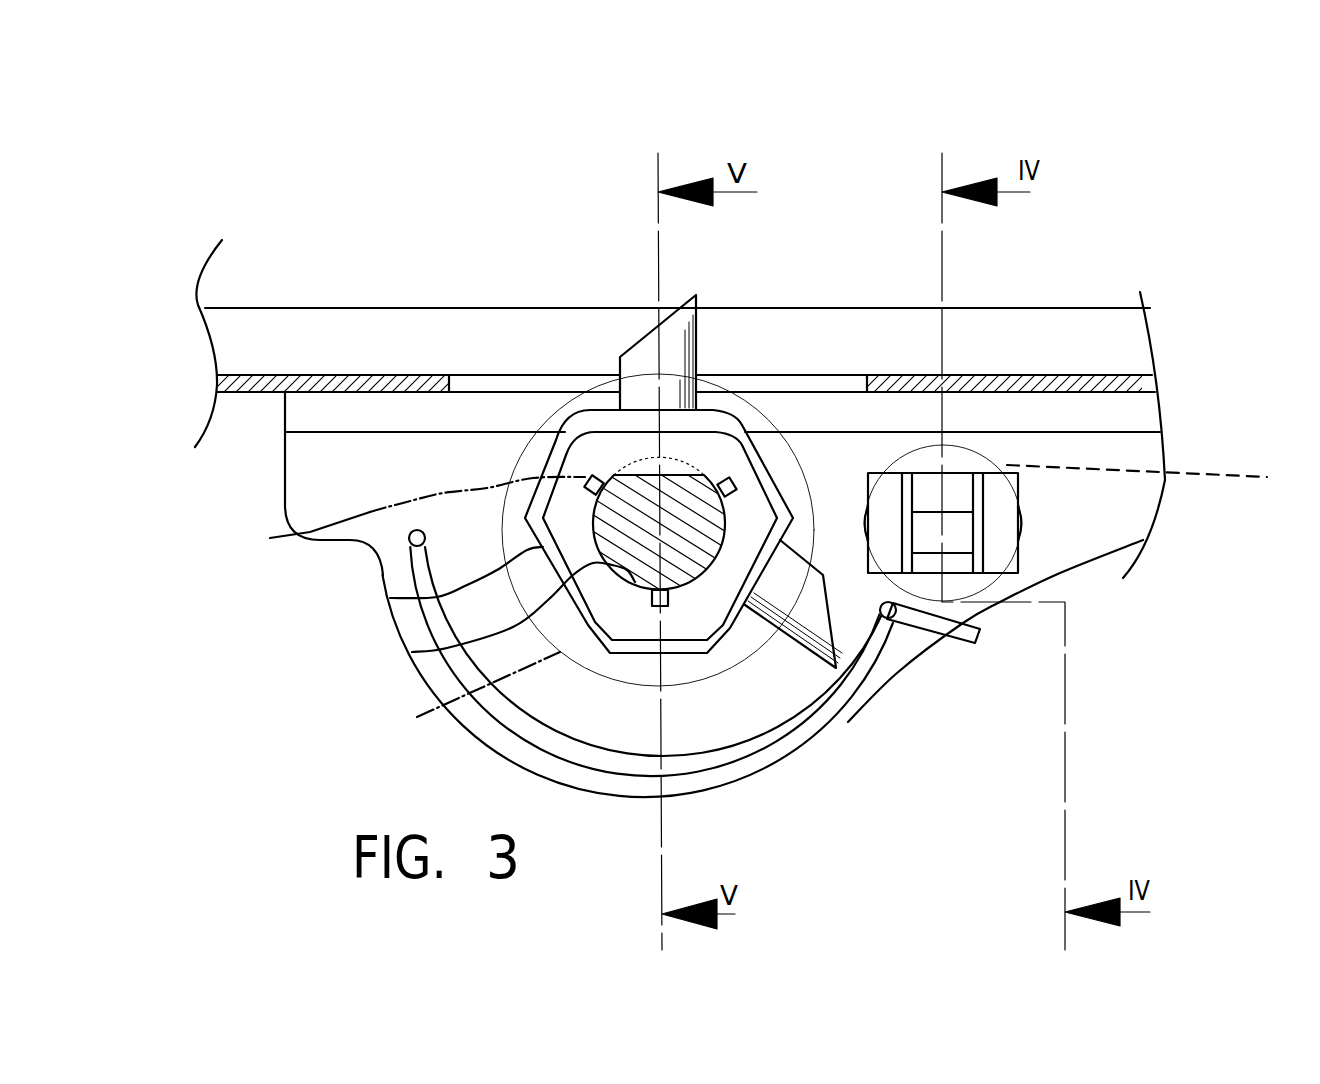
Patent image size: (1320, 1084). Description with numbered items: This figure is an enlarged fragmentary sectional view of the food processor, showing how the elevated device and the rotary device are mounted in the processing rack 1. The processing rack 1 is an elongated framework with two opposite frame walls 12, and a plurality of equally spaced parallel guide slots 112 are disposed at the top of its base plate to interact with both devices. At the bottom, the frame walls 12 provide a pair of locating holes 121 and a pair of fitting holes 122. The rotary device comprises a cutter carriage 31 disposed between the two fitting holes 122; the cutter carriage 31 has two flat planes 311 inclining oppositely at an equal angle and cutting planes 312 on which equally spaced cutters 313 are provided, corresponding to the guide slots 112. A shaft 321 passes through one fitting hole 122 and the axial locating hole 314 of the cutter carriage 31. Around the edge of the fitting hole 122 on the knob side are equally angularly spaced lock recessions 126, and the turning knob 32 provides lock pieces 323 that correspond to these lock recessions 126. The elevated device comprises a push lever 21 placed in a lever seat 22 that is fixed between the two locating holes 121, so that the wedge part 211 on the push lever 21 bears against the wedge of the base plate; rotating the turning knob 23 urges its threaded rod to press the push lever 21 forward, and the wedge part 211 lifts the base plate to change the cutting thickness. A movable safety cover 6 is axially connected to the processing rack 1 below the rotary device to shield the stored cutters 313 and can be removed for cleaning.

The processing rack 1 is at (343, 308).
The frame wall 12 is at (409, 330).
The guide slot 112 is at (497, 385).
The cutter 313 is at (688, 328).
The cutting plane 312 is at (713, 413).
The cutter carriage 31 is at (694, 640).
The shaft 321 is at (628, 640).
The flat plane 311 is at (390, 598).
The fitting hole 122 is at (444, 619).
The axial locating hole 314 is at (412, 652).
The lock recession 126 is at (373, 518).
The lock piece 323 is at (373, 518).
The turning knob 32 is at (417, 717).
The safety cover 6 is at (838, 693).
The push lever 21 is at (963, 547).
The lever seat 22 is at (997, 560).
The wedge part 211 is at (962, 482).
The locating hole 121 is at (1020, 480).
The turning knob 23 is at (1153, 475).